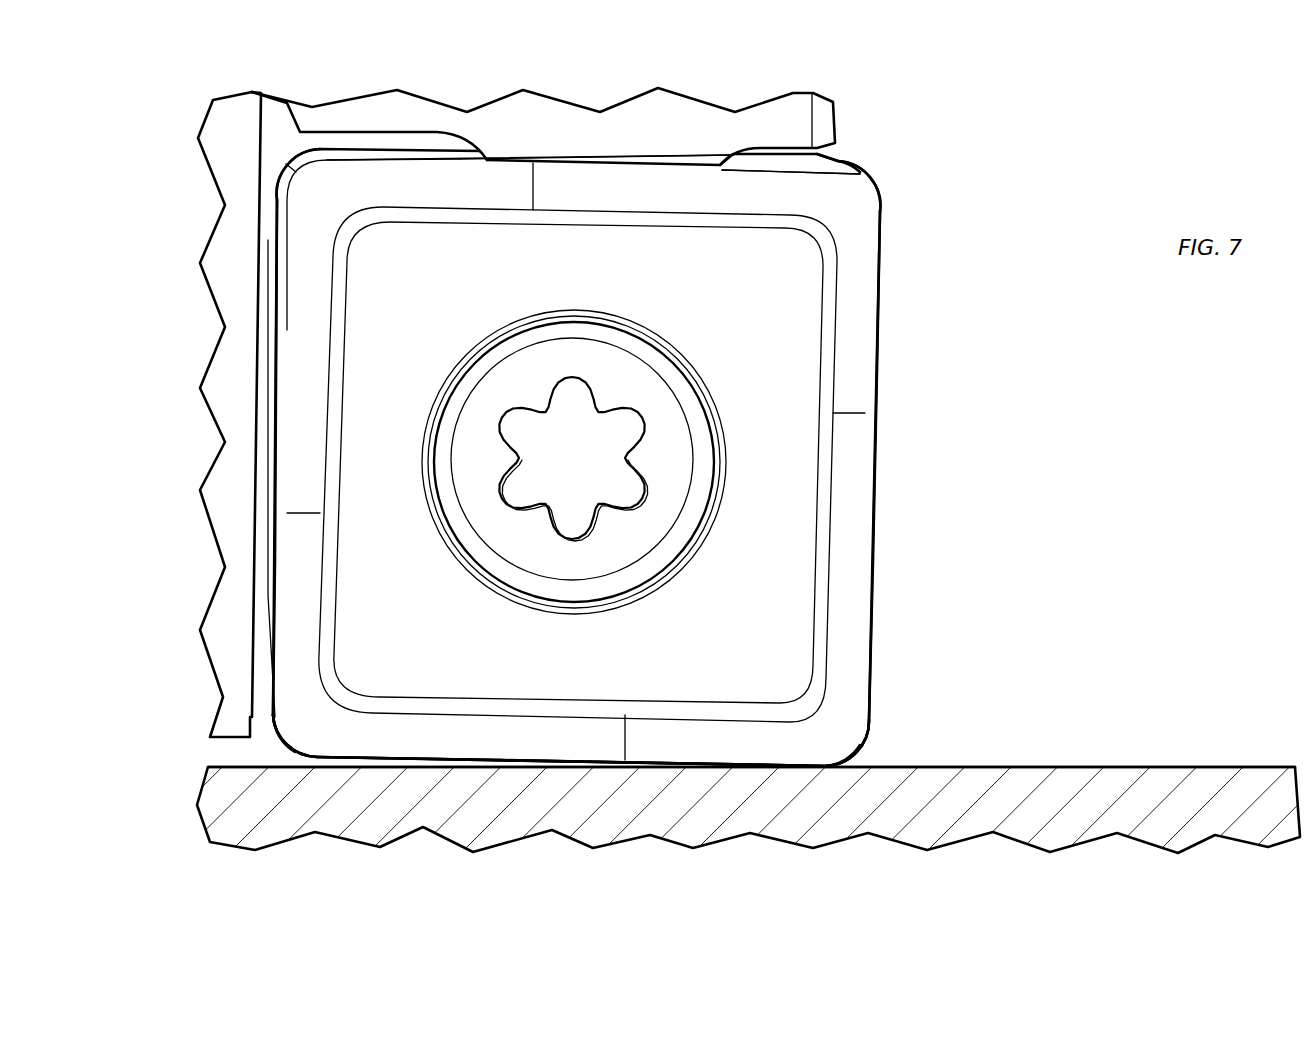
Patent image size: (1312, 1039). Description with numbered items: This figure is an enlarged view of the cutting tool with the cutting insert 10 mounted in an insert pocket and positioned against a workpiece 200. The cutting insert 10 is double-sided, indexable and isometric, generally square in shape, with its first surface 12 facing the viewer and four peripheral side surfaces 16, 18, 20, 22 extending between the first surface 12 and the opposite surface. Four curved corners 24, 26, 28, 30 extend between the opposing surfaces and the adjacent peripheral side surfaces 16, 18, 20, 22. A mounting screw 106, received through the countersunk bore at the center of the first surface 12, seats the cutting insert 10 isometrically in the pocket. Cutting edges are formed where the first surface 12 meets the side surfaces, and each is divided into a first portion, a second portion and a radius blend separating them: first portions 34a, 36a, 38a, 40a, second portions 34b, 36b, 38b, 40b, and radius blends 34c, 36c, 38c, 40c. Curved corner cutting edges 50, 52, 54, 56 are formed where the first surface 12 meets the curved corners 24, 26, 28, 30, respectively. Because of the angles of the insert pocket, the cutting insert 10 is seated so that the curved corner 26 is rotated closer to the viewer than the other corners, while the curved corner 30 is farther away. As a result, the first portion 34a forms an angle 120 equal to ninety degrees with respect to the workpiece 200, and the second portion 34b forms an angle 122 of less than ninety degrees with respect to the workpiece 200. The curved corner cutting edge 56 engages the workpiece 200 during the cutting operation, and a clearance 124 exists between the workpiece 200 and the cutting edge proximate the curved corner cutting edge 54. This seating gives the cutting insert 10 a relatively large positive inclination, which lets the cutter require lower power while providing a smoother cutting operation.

The cutting insert 10 is at (980, 299).
The first surface 12 is at (770, 500).
The peripheral side surface 16 is at (885, 510).
The peripheral side surface 18 is at (612, 160).
The peripheral side surface 20 is at (264, 467).
The peripheral side surface 22 is at (524, 772).
The curved corner 24 is at (886, 184).
The curved corner 26 is at (288, 150).
The curved corner 28 is at (278, 755).
The curved corner 30 is at (855, 760).
The first portion of cutting edge 34a is at (872, 663).
The second portion of cutting edge 34b is at (880, 262).
The radius blend 34c is at (880, 413).
The first portion of cutting edge 36a is at (793, 170).
The second portion of cutting edge 36b is at (390, 160).
The radius blend 36c is at (533, 162).
The first portion of cutting edge 38a is at (283, 272).
The second portion of cutting edge 38b is at (275, 667).
The radius blend 38c is at (275, 516).
The first portion of cutting edge 40a is at (447, 757).
The second portion of cutting edge 40b is at (702, 767).
The radius blend 40c is at (622, 767).
The curved corner cutting edge 50 is at (871, 180).
The curved corner cutting edge 52 is at (290, 168).
The curved corner cutting edge 54 is at (279, 757).
The curved corner cutting edge 56 is at (878, 748).
The mounting screw 106 is at (630, 380).
The angle 120 is at (878, 550).
The angle 122 is at (882, 337).
The clearance 124 is at (305, 757).
The workpiece 200 is at (985, 818).